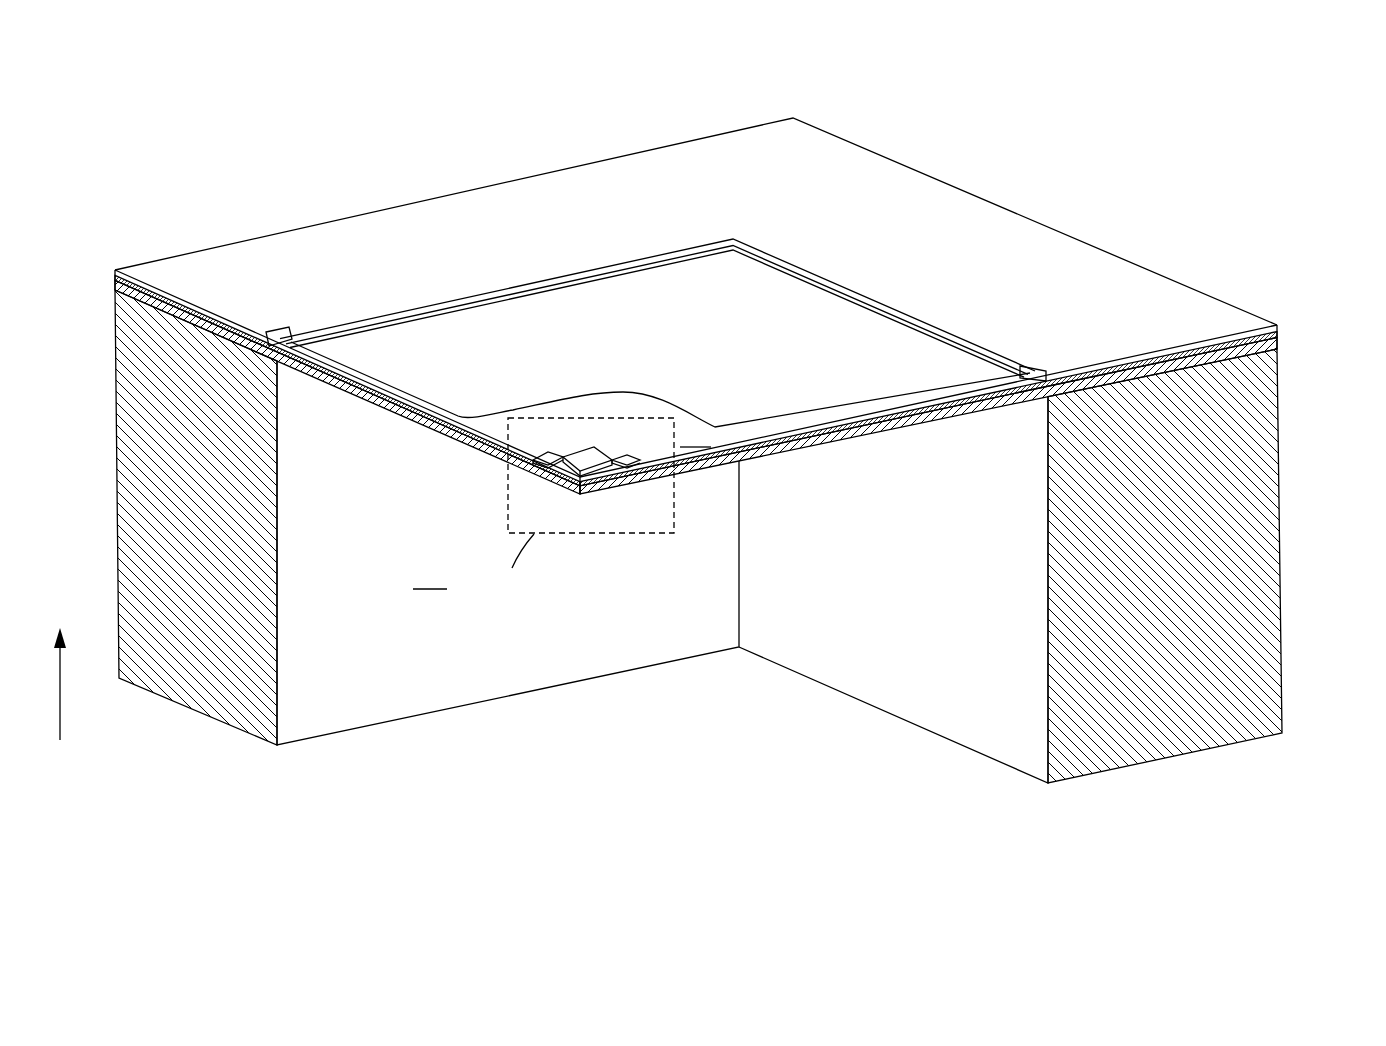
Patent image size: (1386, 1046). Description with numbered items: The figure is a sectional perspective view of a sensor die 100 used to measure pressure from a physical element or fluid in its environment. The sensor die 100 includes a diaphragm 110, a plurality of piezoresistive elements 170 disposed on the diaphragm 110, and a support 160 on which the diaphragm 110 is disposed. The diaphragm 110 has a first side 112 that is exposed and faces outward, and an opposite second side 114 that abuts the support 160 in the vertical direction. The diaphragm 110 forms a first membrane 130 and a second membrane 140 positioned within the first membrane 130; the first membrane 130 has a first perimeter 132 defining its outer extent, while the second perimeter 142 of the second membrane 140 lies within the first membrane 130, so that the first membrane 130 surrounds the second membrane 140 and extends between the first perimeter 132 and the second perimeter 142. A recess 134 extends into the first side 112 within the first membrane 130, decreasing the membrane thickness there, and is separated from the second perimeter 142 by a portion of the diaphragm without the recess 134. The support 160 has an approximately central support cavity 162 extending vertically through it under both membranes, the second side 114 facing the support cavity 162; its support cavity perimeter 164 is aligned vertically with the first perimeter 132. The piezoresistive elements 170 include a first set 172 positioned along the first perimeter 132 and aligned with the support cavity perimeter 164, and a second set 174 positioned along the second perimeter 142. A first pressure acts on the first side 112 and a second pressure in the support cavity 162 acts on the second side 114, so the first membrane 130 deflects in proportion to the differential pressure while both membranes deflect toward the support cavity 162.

The sensor die 100 is at (110, 138).
The diaphragm 110 is at (1297, 330).
The first side 112 is at (183, 268).
The second side 114 is at (322, 382).
The first membrane 130 is at (523, 430).
The first perimeter 132 is at (905, 312).
The recess 134 is at (634, 280).
The second membrane 140 is at (603, 471).
The second perimeter 142 is at (580, 449).
The support 160 is at (1264, 585).
The support cavity 162 is at (428, 702).
The support cavity perimeter 164 is at (923, 712).
The piezoresistive elements 170 is at (662, 442).
The first set of piezoresistive elements 172 is at (276, 332).
The second set of piezoresistive elements 174 is at (537, 459).